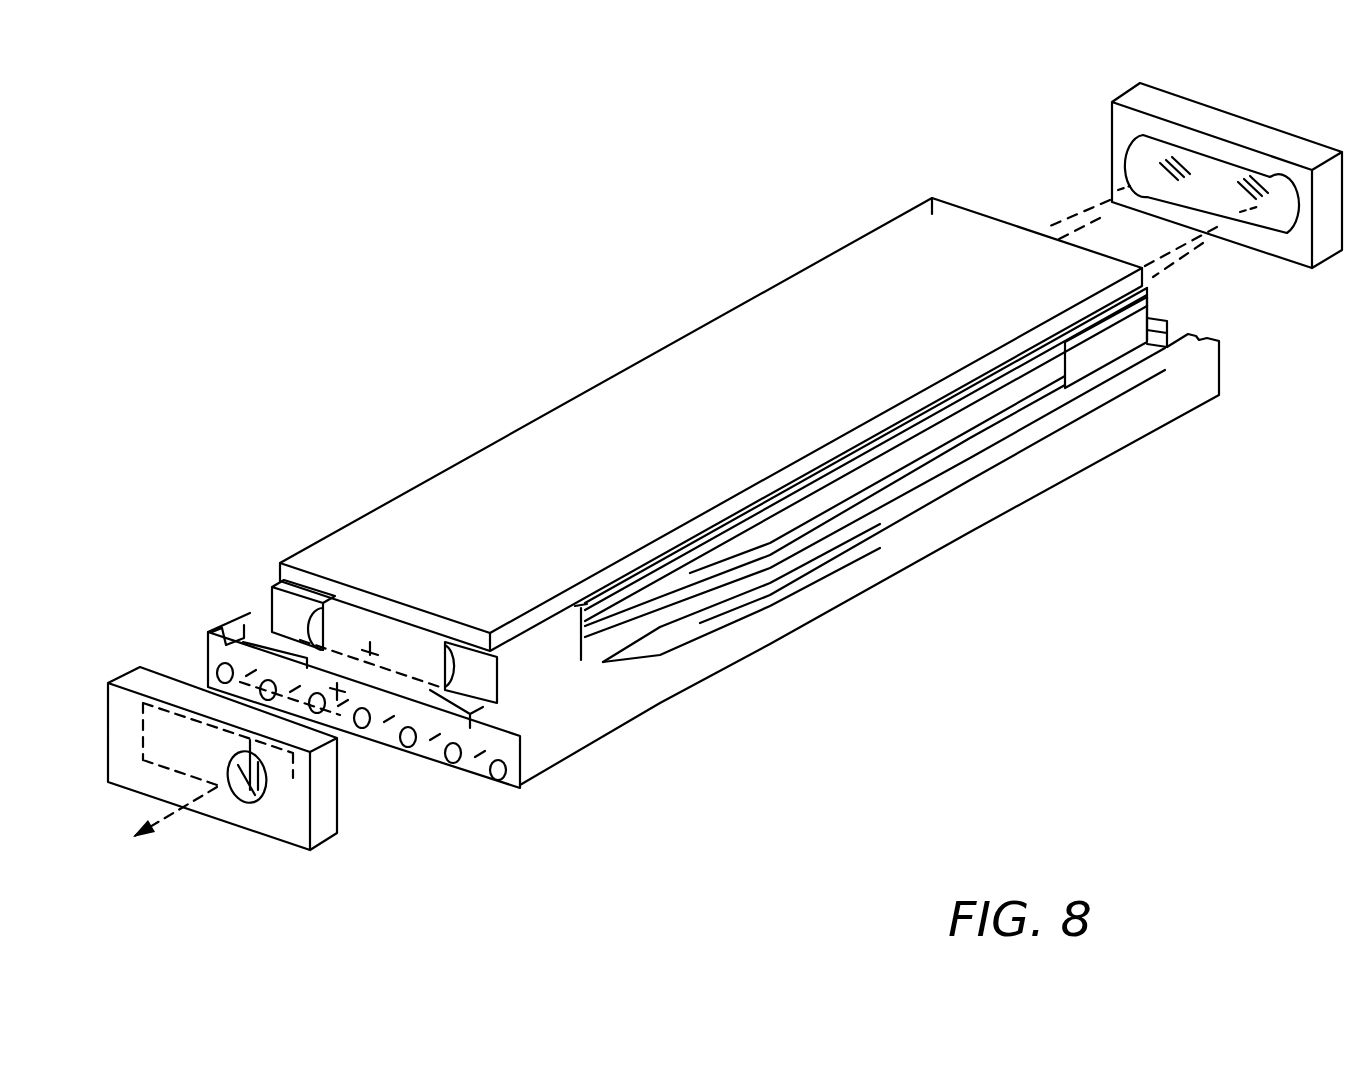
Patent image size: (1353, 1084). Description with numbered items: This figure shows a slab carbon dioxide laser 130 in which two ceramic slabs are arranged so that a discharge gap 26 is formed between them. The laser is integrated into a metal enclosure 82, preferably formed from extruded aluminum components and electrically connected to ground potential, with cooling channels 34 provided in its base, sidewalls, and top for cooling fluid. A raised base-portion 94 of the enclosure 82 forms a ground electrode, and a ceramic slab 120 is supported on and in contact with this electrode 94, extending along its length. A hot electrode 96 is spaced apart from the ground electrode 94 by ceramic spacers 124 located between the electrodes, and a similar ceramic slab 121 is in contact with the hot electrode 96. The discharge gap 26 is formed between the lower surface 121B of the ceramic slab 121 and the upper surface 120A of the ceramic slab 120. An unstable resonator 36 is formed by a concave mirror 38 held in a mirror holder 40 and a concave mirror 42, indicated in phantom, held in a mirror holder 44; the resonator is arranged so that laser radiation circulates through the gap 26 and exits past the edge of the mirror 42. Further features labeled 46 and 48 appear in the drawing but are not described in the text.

The discharge gap 26 is at (370, 648).
The cooling channels 34 is at (207, 657).
The unstable resonator 36 is at (1147, 249).
The concave mirror 38 is at (1133, 155).
The mirror holder 40 is at (1168, 101).
The concave mirror 42 is at (150, 748).
The mirror holder 44 is at (133, 687).
The alignment lines 46 is at (1098, 195).
The output port 48 is at (263, 805).
The metal enclosure 82 is at (607, 733).
The raised base-portion 94 is at (338, 700).
The hot electrode 96 is at (624, 370).
The ceramic slab 120 is at (340, 653).
The upper surface 120A is at (400, 700).
The ceramic slab 121 is at (407, 618).
The lower surface 121B is at (433, 650).
The ceramic spacers 124 is at (300, 617).
The slab laser 130 is at (1040, 694).